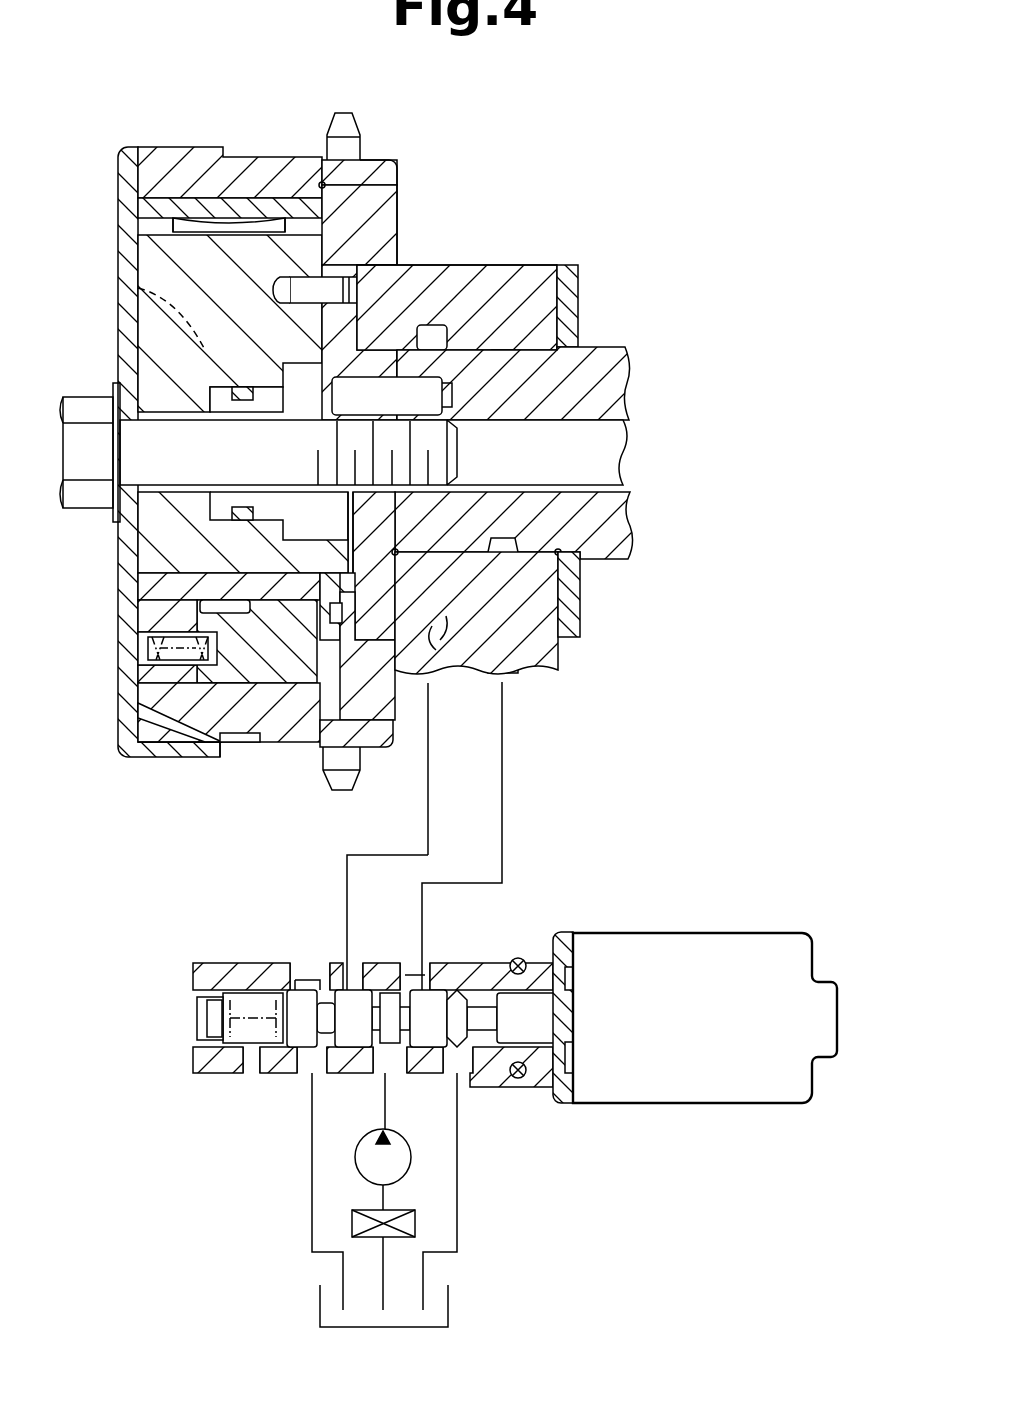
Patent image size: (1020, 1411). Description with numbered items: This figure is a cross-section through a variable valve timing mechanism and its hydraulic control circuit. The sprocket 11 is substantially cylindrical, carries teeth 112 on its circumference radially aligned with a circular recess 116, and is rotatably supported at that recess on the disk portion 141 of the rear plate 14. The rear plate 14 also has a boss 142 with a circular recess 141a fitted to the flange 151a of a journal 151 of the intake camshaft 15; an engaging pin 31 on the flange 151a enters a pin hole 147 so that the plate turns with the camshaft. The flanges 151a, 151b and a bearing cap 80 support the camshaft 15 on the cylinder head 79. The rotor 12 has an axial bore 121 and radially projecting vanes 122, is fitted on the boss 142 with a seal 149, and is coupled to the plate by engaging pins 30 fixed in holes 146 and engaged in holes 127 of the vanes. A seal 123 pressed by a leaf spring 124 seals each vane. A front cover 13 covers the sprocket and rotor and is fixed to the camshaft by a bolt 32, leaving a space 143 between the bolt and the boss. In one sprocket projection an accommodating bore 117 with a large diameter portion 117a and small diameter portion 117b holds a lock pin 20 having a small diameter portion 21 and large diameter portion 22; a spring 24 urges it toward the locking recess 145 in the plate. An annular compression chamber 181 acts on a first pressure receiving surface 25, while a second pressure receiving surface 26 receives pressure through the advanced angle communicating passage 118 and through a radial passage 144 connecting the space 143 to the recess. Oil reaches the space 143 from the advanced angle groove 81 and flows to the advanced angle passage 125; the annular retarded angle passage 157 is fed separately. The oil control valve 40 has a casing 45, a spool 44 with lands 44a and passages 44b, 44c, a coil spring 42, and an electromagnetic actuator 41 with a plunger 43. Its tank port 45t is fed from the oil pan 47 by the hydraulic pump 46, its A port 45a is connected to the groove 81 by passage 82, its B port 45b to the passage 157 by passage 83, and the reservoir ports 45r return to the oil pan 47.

The sprocket 11 is at (197, 152).
The rotor 12 is at (317, 200).
The front cover 13 is at (118, 190).
The rear plate 14 is at (398, 214).
The intake camshaft 15 is at (610, 347).
The lock pin 20 is at (140, 672).
The small diameter portion 21 is at (343, 674).
The large diameter portion 22 is at (138, 701).
The spring 24 is at (138, 648).
The first pressure receiving surface 25 is at (160, 757).
The second pressure receiving surface 26 is at (312, 610).
The engaging pin 30 is at (301, 303).
The engaging pin 31 is at (380, 407).
The bolt 32 is at (88, 397).
The oil control valve 40 is at (652, 917).
The electromagnetic actuator 41 is at (670, 1036).
The coil spring 42 is at (237, 1003).
The plunger 43 is at (545, 1090).
The spool 44 is at (274, 1023).
The lands 44a is at (354, 980).
The passage 44b is at (405, 978).
The passage 44c is at (324, 987).
The casing 45 is at (491, 961).
The A port 45a is at (304, 961).
The B port 45b is at (433, 963).
The reservoir ports 45r is at (304, 1078).
The tank port 45t is at (374, 1072).
The hydraulic pump 46 is at (406, 1134).
The oil pan 47 is at (450, 1300).
The cylinder head 79 is at (556, 660).
The bearing cap 80 is at (530, 270).
The advanced angle groove 81 is at (454, 633).
The passage 82 is at (428, 832).
The passage 83 is at (502, 832).
The teeth 112 is at (362, 118).
The circular recess 116 is at (398, 185).
The accommodating bore 117 is at (224, 608).
The large diameter portion 117a is at (140, 618).
The small diameter portion 117b is at (285, 742).
The advanced angle communicating passage 118 is at (310, 658).
The axial bore 121 is at (162, 421).
The vanes 122 is at (262, 292).
The seal 123 is at (186, 217).
The leaf spring 124 is at (245, 218).
The advanced angle passage 125 is at (190, 332).
The hole 127 is at (300, 277).
The disk portion 141 is at (392, 722).
The circular recess 141a is at (434, 672).
The boss 142 is at (216, 520).
The space 143 is at (270, 491).
The radial passage 144 is at (356, 537).
The locking recess 145 is at (326, 778).
The holes 146 is at (343, 275).
The pin hole 147 is at (385, 307).
The seal 149 is at (244, 386).
The journal 151 is at (530, 548).
The flange 151a is at (388, 264).
The flange 151b is at (582, 271).
The retarded angle passage 157 is at (498, 537).
The compression chamber 181 is at (224, 744).